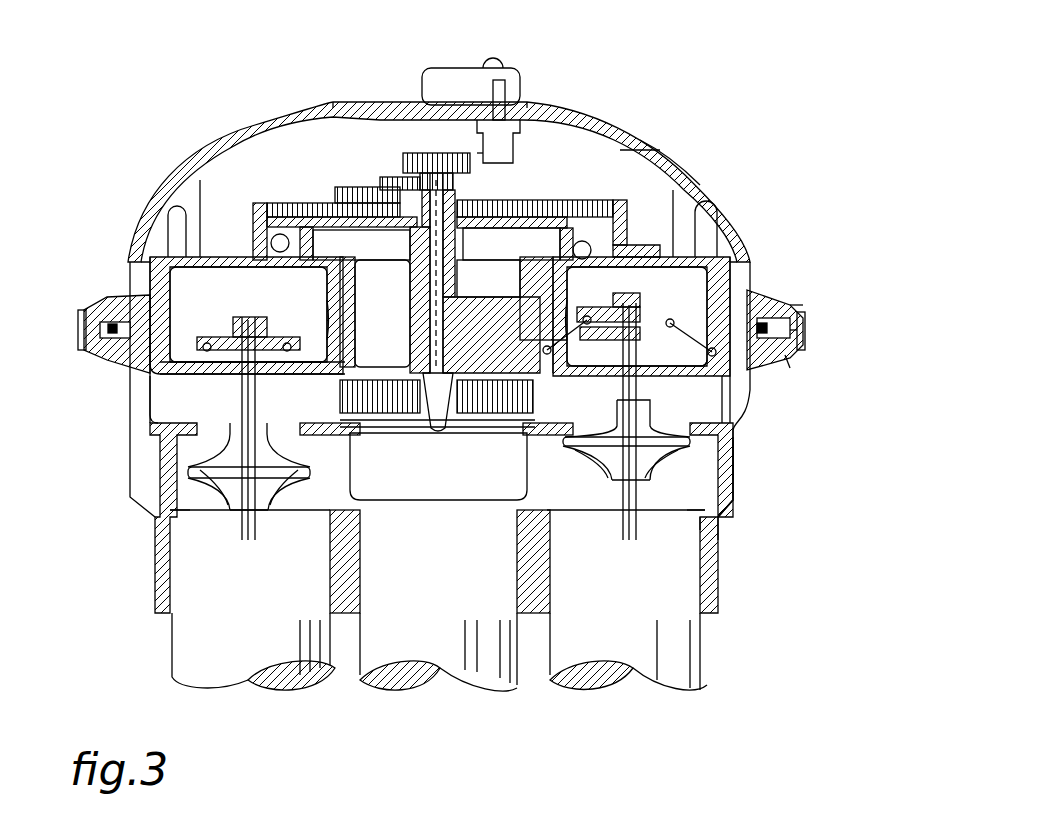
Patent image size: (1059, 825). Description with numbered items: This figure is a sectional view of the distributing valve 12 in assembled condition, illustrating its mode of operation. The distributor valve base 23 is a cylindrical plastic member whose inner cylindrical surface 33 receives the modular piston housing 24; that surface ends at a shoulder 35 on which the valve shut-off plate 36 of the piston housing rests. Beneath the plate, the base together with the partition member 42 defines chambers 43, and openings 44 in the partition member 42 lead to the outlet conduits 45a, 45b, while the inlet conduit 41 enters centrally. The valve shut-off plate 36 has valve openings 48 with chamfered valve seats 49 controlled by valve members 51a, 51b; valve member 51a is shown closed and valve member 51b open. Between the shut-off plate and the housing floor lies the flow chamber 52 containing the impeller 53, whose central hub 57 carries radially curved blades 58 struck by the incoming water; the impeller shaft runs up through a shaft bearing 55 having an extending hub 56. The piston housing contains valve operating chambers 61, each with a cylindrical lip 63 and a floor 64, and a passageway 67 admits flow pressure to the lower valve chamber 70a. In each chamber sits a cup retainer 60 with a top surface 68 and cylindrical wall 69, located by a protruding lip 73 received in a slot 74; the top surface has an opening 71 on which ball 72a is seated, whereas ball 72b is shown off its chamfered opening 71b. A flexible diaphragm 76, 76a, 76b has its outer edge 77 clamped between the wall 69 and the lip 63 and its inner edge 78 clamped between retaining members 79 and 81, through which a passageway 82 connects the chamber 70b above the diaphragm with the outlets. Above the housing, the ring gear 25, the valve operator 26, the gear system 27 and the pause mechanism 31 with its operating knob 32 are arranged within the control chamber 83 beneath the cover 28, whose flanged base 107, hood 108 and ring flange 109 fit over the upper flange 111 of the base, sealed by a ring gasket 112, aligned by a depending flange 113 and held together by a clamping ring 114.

The distributing valve 12 is at (546, 43).
The distributor valve base 23 is at (727, 453).
The modular piston housing 24 is at (170, 290).
The ring gear 25 is at (655, 150).
The valve operator 26 is at (523, 222).
The gear system 27 is at (355, 102).
The distributor valve cover 28 is at (618, 118).
The pause mechanism 31 is at (402, 102).
The operating knob 32 is at (448, 70).
The inner cylindrical surface 33 is at (730, 430).
The shoulder 35 is at (728, 470).
The valve shut-off plate 36 is at (153, 433).
The inlet conduit 41 is at (455, 600).
The partition member 42 is at (712, 512).
The chambers 43 is at (732, 497).
The openings 44 is at (708, 508).
The outlet conduit 45a is at (628, 642).
The outlet conduit 45b is at (266, 600).
The valve openings 48 is at (210, 432).
The chamfered valve seats 49 is at (300, 437).
The valve member 51a is at (705, 505).
The valve member 51b is at (205, 485).
The flow chamber 52 is at (753, 413).
The impeller 53 is at (397, 430).
The shaft bearing 55 is at (440, 323).
The extending hub 56 is at (457, 197).
The central hub 57 is at (473, 427).
The radially curved blades 58 is at (520, 427).
The cup retainer 60 is at (198, 262).
The valve operating chambers 61 is at (235, 297).
The cylindrical lip 63 is at (240, 376).
The floor 64 is at (205, 348).
The passageway 67 is at (150, 387).
The top surface 68 is at (167, 258).
The cylindrical wall 69 is at (165, 275).
The lower valve chamber 70a is at (718, 380).
The chamber above the diaphragm 70b is at (441, 302).
The opening 71 is at (574, 307).
The chamfered opening 71b is at (308, 314).
The ball 72a is at (627, 232).
The ball 72b is at (253, 227).
The protruding lips 73 is at (330, 262).
The slot 74 is at (345, 260).
The flexible diaphragm 76 is at (352, 310).
The flexible diaphragm 76a is at (548, 308).
The flexible diaphragm 76b is at (185, 300).
The outer edge 77 is at (551, 350).
The inner edge 78 is at (277, 372).
The retaining member 79 is at (608, 306).
The retaining member 81 is at (642, 340).
The passageway 82 is at (717, 232).
The control chamber 83 is at (640, 155).
The flanged base 107 is at (760, 284).
The hood 108 is at (690, 190).
The ring flange 109 is at (718, 215).
The upper flange 111 is at (800, 353).
The ring gasket 112 is at (805, 312).
The depending flange 113 is at (803, 330).
The clamping ring 114 is at (800, 303).